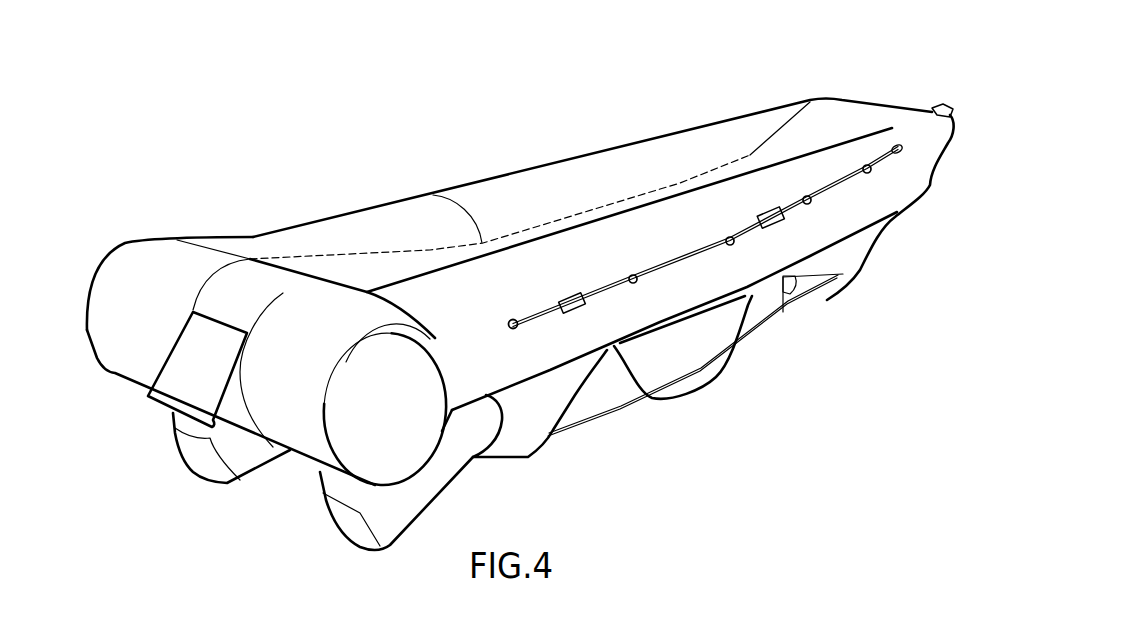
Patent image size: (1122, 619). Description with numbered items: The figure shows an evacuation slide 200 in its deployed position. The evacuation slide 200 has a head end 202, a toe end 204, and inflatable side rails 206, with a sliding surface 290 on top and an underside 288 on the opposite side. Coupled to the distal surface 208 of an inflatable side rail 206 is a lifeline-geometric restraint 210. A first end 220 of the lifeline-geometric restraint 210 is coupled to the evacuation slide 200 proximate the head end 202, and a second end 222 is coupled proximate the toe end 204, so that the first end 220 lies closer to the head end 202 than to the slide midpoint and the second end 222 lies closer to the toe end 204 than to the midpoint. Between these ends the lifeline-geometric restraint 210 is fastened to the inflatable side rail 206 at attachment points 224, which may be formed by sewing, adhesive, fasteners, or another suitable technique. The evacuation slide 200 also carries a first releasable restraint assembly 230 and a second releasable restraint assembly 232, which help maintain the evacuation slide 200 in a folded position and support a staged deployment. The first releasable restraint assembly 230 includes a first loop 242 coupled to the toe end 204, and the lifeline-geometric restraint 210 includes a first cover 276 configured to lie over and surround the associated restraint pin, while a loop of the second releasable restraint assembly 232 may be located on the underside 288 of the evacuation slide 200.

The evacuation slide 200 is at (250, 94).
The head end 202 is at (153, 334).
The toe end 204 is at (860, 102).
The inflatable side rail 206 is at (510, 178).
The distal surface 208 is at (491, 349).
The lifeline-geometric restraint 210 is at (544, 332).
The first end 220 is at (513, 316).
The second end 222 is at (898, 147).
The attachment points 224 is at (633, 274).
The first releasable restraint assembly 230 is at (881, 286).
The second releasable restraint assembly 232 is at (774, 452).
The first loop 242 is at (940, 116).
The first cover 276 is at (783, 213).
The underside 288 is at (812, 264).
The sliding surface 290 is at (397, 277).